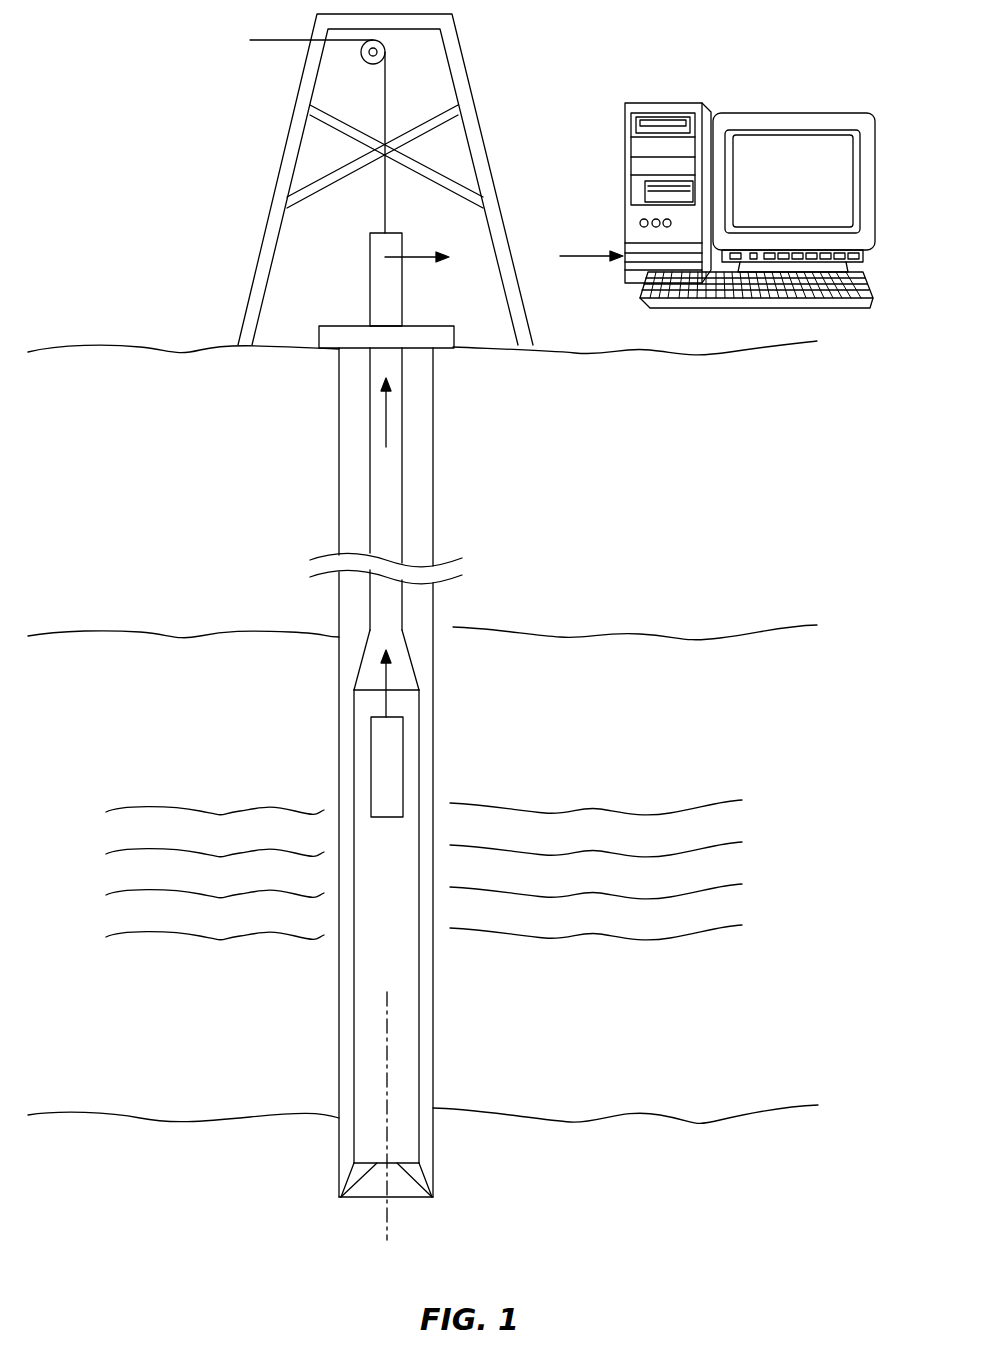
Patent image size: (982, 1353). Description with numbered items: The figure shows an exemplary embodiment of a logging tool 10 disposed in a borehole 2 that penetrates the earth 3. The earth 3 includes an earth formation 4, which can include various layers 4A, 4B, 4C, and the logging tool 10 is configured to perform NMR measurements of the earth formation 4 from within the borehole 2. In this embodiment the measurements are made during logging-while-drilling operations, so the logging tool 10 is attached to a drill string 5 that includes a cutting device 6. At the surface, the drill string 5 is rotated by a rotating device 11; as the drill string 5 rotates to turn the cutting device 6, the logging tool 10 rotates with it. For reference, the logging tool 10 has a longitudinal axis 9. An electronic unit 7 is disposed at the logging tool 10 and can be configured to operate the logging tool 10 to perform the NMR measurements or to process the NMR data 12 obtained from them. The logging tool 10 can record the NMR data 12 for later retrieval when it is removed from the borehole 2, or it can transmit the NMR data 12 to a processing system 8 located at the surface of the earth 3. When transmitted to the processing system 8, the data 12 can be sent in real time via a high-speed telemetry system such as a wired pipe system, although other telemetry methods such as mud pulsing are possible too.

The borehole 2 is at (338, 438).
The earth 3 is at (122, 497).
The earth formation 4 is at (122, 722).
The layer 4A is at (765, 834).
The layer 4B is at (765, 876).
The layer 4C is at (765, 917).
The drill string 5 is at (387, 525).
The cutting device 6 is at (357, 1178).
The electronic unit 7 is at (387, 782).
The processing system 8 is at (642, 102).
The longitudinal axis 9 is at (388, 1068).
The logging tool 10 is at (403, 953).
The rotating device 11 is at (335, 326).
The NMR data 12 is at (580, 255).